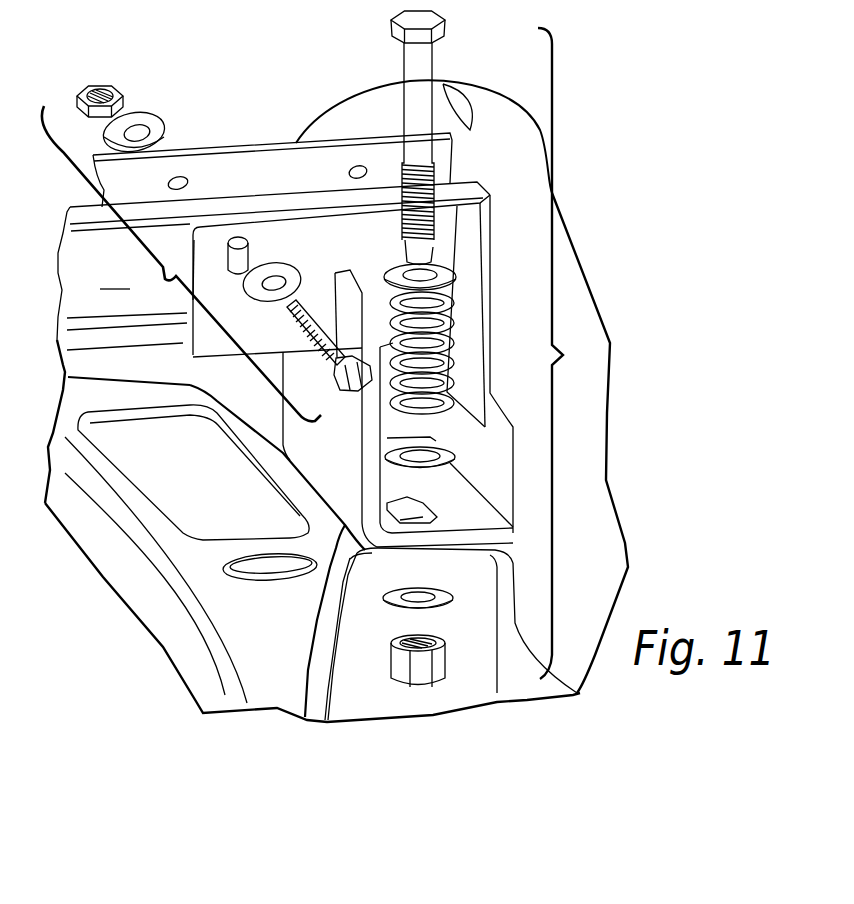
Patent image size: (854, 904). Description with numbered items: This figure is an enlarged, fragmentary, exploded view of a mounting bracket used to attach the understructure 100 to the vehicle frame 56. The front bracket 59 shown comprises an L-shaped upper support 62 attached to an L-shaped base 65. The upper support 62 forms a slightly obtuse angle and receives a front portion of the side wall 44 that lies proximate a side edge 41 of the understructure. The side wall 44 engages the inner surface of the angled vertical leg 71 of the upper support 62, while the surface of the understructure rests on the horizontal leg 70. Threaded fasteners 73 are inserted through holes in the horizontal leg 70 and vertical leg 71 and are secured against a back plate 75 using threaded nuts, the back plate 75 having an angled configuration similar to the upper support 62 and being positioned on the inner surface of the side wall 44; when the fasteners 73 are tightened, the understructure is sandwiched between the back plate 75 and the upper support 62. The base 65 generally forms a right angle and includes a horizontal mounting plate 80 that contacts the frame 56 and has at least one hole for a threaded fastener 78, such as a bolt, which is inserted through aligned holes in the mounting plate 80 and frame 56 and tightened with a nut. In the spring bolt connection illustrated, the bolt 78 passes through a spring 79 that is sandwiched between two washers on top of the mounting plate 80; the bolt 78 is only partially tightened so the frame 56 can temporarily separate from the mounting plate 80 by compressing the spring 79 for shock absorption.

The side edge 41 is at (102, 227).
The side wall 44 is at (273, 283).
The vehicle frame 56 is at (302, 640).
The front bracket 59 is at (275, 414).
The upper support 62 is at (193, 383).
The base 65 is at (330, 500).
The horizontal leg 70 is at (173, 347).
The vertical leg 71 is at (195, 251).
The threaded fastener 73 is at (297, 330).
The back plate 75 is at (260, 140).
The threaded fastener 78 is at (433, 68).
The spring 79 is at (455, 355).
The mounting plate 80 is at (463, 533).
The understructure 100 is at (490, 220).